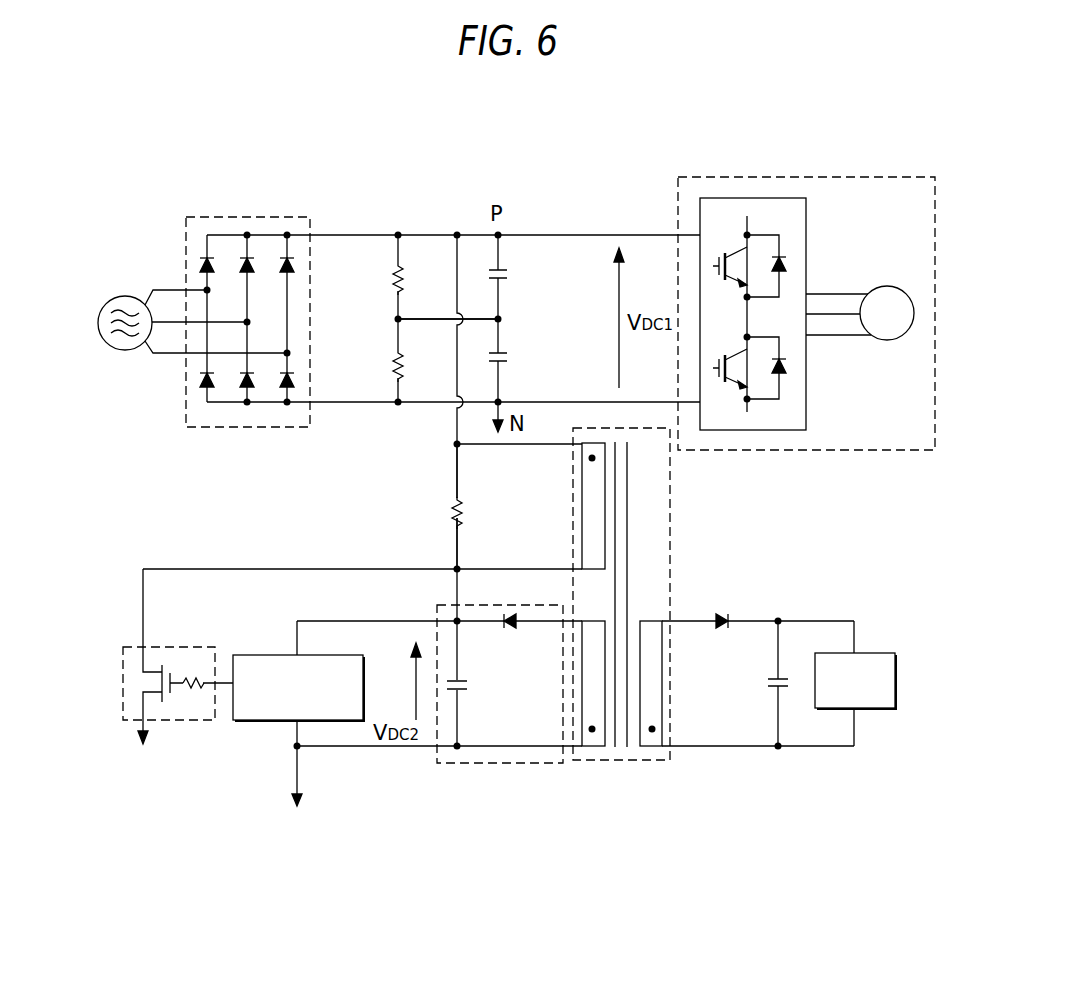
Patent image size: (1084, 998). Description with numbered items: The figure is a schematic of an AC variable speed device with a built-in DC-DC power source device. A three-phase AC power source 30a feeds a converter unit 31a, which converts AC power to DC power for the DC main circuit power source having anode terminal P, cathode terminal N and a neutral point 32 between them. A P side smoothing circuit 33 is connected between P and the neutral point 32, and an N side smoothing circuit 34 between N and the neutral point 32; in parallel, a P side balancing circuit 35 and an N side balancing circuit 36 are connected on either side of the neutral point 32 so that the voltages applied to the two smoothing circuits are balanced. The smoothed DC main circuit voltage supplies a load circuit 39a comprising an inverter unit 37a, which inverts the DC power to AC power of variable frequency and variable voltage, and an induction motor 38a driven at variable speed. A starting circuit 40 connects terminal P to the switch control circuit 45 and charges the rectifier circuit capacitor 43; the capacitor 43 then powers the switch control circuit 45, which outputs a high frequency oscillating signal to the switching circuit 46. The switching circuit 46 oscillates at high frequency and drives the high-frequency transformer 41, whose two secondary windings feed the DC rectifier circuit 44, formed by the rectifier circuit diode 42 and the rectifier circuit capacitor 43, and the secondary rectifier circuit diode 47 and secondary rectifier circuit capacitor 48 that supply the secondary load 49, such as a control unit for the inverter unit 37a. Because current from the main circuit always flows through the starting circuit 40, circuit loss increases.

The three-phase AC power source 30a is at (113, 298).
The converter unit 31a is at (186, 229).
The neutral point 32 is at (395, 319).
The P side smoothing circuit 33 is at (507, 268).
The N side smoothing circuit 34 is at (507, 353).
The P side balancing circuit 35 is at (392, 280).
The N side balancing circuit 36 is at (393, 362).
The inverter unit 37a is at (806, 240).
The induction motor 38a is at (895, 340).
The load circuit 39a is at (870, 177).
The starting circuit 40 is at (450, 505).
The high-frequency transformer 41 is at (672, 562).
The rectifier circuit diode 42 is at (510, 630).
The rectifier circuit capacitor 43 is at (470, 690).
The DC rectifier circuit 44 is at (487, 763).
The switch control circuit 45 is at (245, 720).
The switching circuit 46 is at (123, 705).
The secondary rectifier circuit diode 47 is at (722, 628).
The secondary rectifier circuit capacitor 48 is at (765, 682).
The secondary load 49 is at (896, 680).